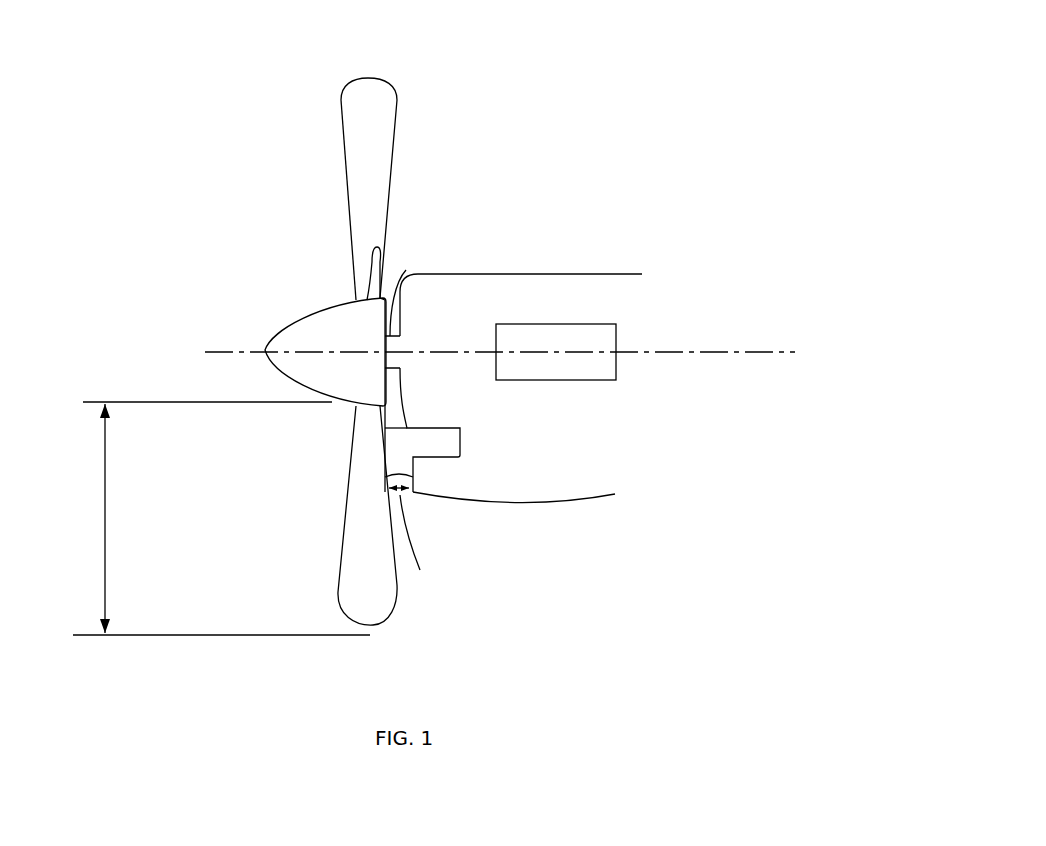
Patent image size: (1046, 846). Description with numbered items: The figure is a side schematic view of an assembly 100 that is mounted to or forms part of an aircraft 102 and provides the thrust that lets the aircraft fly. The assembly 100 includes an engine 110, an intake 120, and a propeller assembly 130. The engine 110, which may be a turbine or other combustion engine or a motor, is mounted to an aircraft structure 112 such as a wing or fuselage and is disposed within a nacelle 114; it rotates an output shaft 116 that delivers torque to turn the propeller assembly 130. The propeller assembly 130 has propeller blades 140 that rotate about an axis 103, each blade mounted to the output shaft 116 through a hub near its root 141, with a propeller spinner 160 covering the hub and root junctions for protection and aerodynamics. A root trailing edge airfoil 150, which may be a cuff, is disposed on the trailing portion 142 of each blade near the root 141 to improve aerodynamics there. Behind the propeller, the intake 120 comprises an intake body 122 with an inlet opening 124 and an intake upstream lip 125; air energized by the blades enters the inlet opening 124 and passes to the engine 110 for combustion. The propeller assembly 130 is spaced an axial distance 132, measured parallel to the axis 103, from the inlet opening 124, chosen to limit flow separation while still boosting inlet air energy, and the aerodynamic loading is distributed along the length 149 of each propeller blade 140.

The assembly 100 is at (616, 54).
The aircraft 102 is at (689, 179).
The axis 103 is at (725, 350).
The engine 110 is at (616, 330).
The aircraft structure 112 is at (590, 275).
The nacelle 114 is at (530, 248).
The output shaft 116 is at (406, 270).
The intake 120 is at (476, 526).
The intake body 122 is at (551, 490).
The inlet opening 124 is at (401, 464).
The intake upstream lip 125 is at (385, 487).
The propeller assembly 130 is at (314, 160).
The axial distance 132 is at (420, 549).
The propeller blade 140 is at (347, 106).
The root 141 is at (342, 253).
The trailing portion 142 is at (391, 255).
The length 149 is at (105, 518).
The propeller root trailing edge airfoil 150 is at (390, 250).
The propeller spinner 160 is at (300, 337).